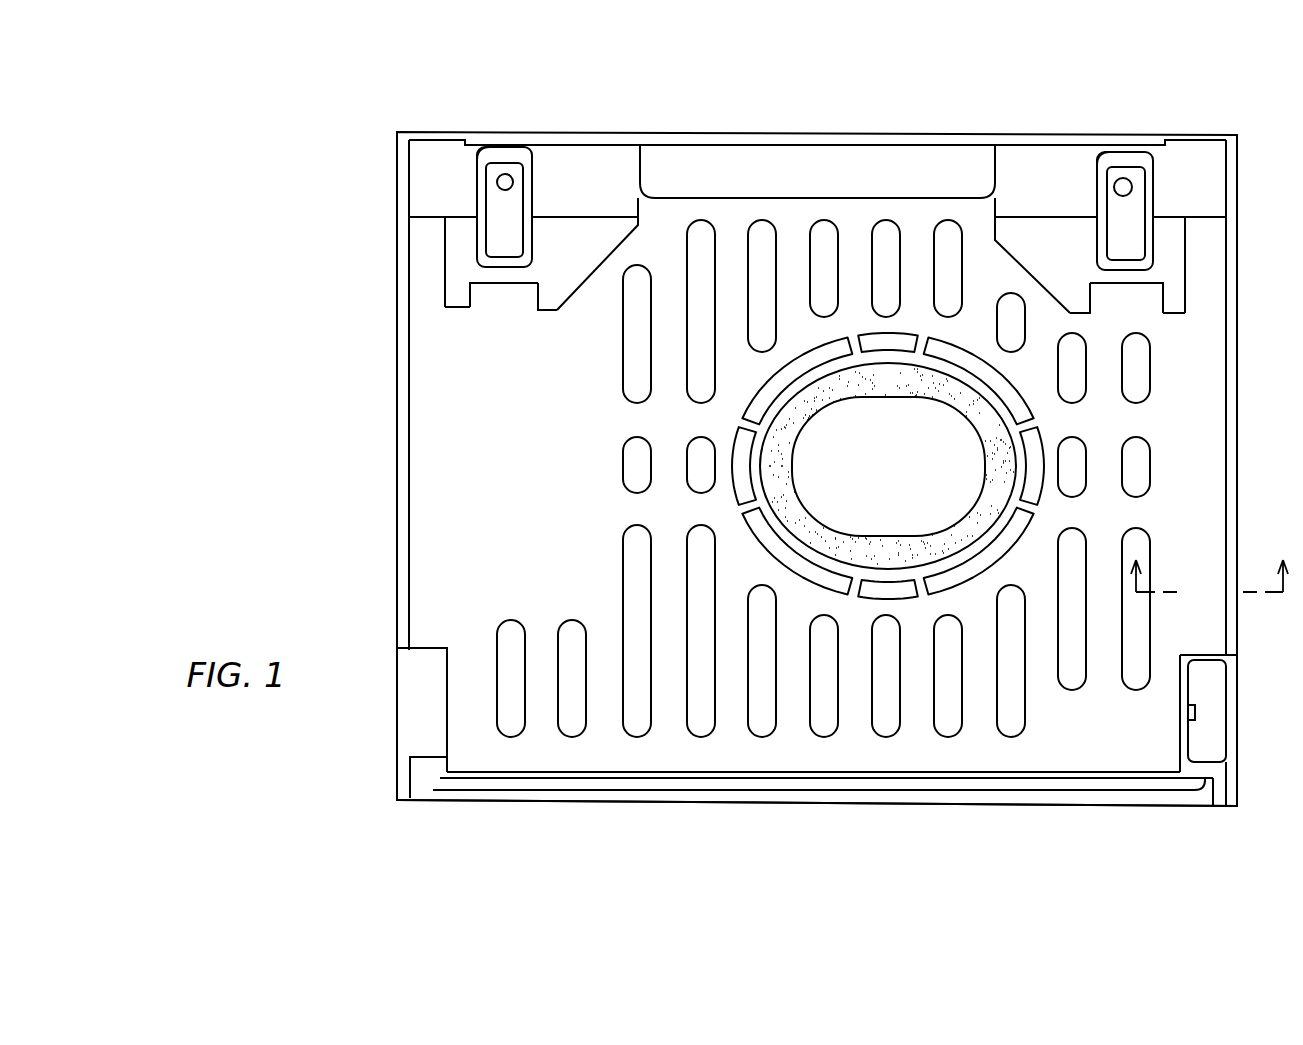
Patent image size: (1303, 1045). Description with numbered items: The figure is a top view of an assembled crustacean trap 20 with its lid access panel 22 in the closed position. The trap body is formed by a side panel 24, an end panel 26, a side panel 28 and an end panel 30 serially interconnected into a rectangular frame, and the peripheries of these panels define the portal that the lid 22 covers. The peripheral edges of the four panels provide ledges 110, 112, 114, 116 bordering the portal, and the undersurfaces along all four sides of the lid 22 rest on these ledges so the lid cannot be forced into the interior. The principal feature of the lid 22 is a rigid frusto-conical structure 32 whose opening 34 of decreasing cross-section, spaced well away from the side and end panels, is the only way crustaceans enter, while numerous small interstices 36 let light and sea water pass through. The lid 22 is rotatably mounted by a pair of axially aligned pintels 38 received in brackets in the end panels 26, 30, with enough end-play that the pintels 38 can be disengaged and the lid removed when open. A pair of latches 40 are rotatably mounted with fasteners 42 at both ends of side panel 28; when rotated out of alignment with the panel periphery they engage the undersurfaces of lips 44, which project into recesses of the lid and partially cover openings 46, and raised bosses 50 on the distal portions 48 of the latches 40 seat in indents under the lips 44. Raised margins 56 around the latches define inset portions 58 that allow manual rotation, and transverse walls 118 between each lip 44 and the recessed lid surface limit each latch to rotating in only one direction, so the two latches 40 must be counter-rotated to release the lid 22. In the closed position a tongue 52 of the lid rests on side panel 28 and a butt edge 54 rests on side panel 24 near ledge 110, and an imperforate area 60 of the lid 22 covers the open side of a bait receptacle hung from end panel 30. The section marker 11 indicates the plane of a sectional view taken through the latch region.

The crustacean trap 20 is at (1112, 107).
The lid access panel 22 is at (1237, 368).
The side panel 24 is at (716, 804).
The end panel 26 is at (1237, 690).
The side panel 28 is at (893, 133).
The end panel 30 is at (400, 660).
The frusto-conical structure 32 is at (985, 469).
The opening 34 is at (834, 473).
The interstices 36 is at (1140, 468).
The pintels 38 is at (443, 710).
The latches 40 is at (535, 198).
The fasteners 42 is at (512, 180).
The lips 44 is at (447, 285).
The openings 46 is at (541, 283).
The distal portions 48 is at (447, 263).
The raised bosses 50 is at (1124, 283).
The tongue 52 is at (641, 200).
The butt edge 54 is at (1130, 772).
The raised margins 56 is at (497, 157).
The inset portions 58 is at (494, 244).
The imperforate area 60 is at (505, 481).
The ledge 110 is at (1197, 792).
The ledge 112 is at (1232, 667).
The ledge 114 is at (1022, 170).
The ledge 116 is at (408, 216).
The transverse walls 118 is at (447, 306).
The section line 11- 11 is at (1209, 564).